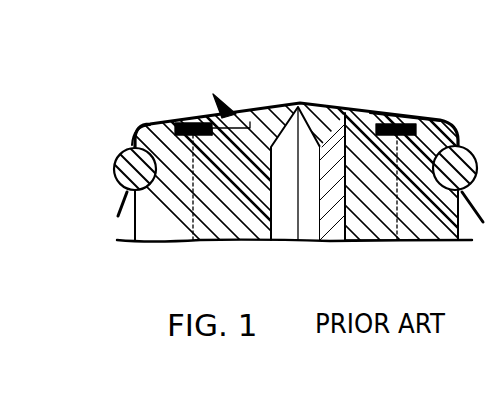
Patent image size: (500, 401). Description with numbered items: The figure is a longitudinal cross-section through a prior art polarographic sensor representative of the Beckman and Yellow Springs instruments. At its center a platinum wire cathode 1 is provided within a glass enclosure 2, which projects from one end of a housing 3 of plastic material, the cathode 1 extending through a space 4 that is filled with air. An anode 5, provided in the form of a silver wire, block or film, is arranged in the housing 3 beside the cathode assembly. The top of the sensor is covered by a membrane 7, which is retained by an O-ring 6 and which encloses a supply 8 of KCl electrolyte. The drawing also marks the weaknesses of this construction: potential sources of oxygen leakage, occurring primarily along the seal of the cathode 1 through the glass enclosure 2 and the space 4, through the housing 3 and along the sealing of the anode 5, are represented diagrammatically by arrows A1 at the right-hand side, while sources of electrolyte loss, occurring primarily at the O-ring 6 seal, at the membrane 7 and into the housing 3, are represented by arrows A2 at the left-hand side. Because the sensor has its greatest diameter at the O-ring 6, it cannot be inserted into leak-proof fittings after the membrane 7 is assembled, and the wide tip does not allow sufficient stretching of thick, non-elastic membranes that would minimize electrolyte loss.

The platinum wire cathode 1 is at (292, 230).
The glass enclosure 2 is at (246, 121).
The housing 3 is at (381, 186).
The space 4 is at (291, 186).
The anode 5 is at (209, 120).
The O-ring 6 is at (114, 168).
The membrane 7 is at (128, 126).
The supply of KCl 8 is at (381, 115).
The arrows representing oxygen leakage A1 is at (474, 62).
The arrows representing electrolyte loss A2 is at (122, 62).